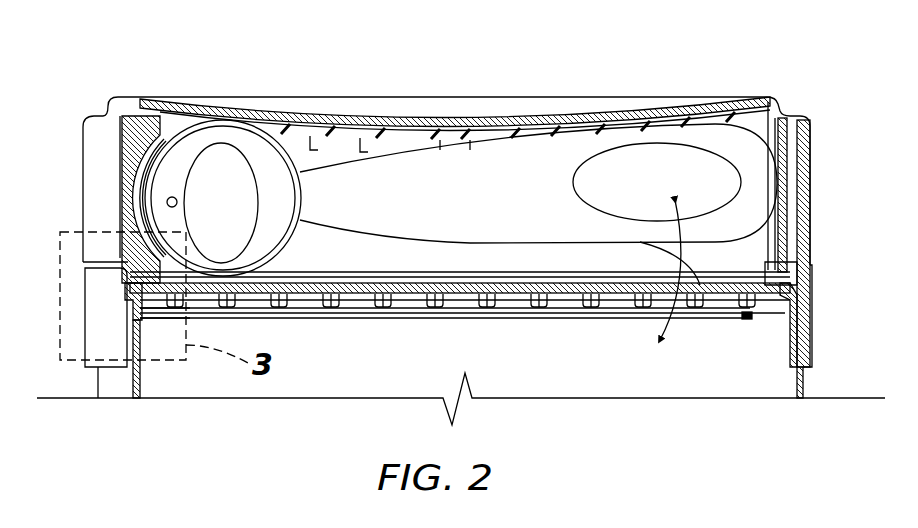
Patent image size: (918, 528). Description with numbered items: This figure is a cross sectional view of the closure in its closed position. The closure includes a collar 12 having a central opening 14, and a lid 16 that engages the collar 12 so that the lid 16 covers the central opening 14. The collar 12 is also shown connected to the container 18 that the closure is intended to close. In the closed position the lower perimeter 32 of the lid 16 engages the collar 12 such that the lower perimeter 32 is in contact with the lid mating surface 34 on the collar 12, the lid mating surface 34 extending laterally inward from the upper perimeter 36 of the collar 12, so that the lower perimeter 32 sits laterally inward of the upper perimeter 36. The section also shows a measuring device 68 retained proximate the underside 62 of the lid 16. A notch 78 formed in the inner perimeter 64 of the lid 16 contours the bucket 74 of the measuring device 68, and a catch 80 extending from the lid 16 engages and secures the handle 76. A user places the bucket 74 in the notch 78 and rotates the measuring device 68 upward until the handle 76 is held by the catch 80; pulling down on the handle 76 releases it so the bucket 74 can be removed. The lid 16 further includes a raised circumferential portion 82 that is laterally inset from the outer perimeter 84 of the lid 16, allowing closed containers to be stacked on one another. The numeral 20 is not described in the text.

The collar 12 is at (90, 350).
The central opening 14 is at (547, 282).
The lid 16 is at (95, 138).
The container 18 is at (127, 385).
The retaining hook 20 is at (138, 292).
The lower perimeter 32 is at (100, 260).
The lid mating surface 34 is at (147, 310).
The upper perimeter 36 is at (100, 268).
The underside 62 is at (552, 128).
The inner perimeter 64 is at (167, 257).
The measuring device 68 is at (404, 178).
The bucket 74 is at (243, 118).
The handle 76 is at (638, 170).
The notch 78 is at (170, 140).
The catch 80 is at (773, 222).
The raised circumferential portion 82 is at (768, 97).
The outer perimeter 84 is at (812, 140).